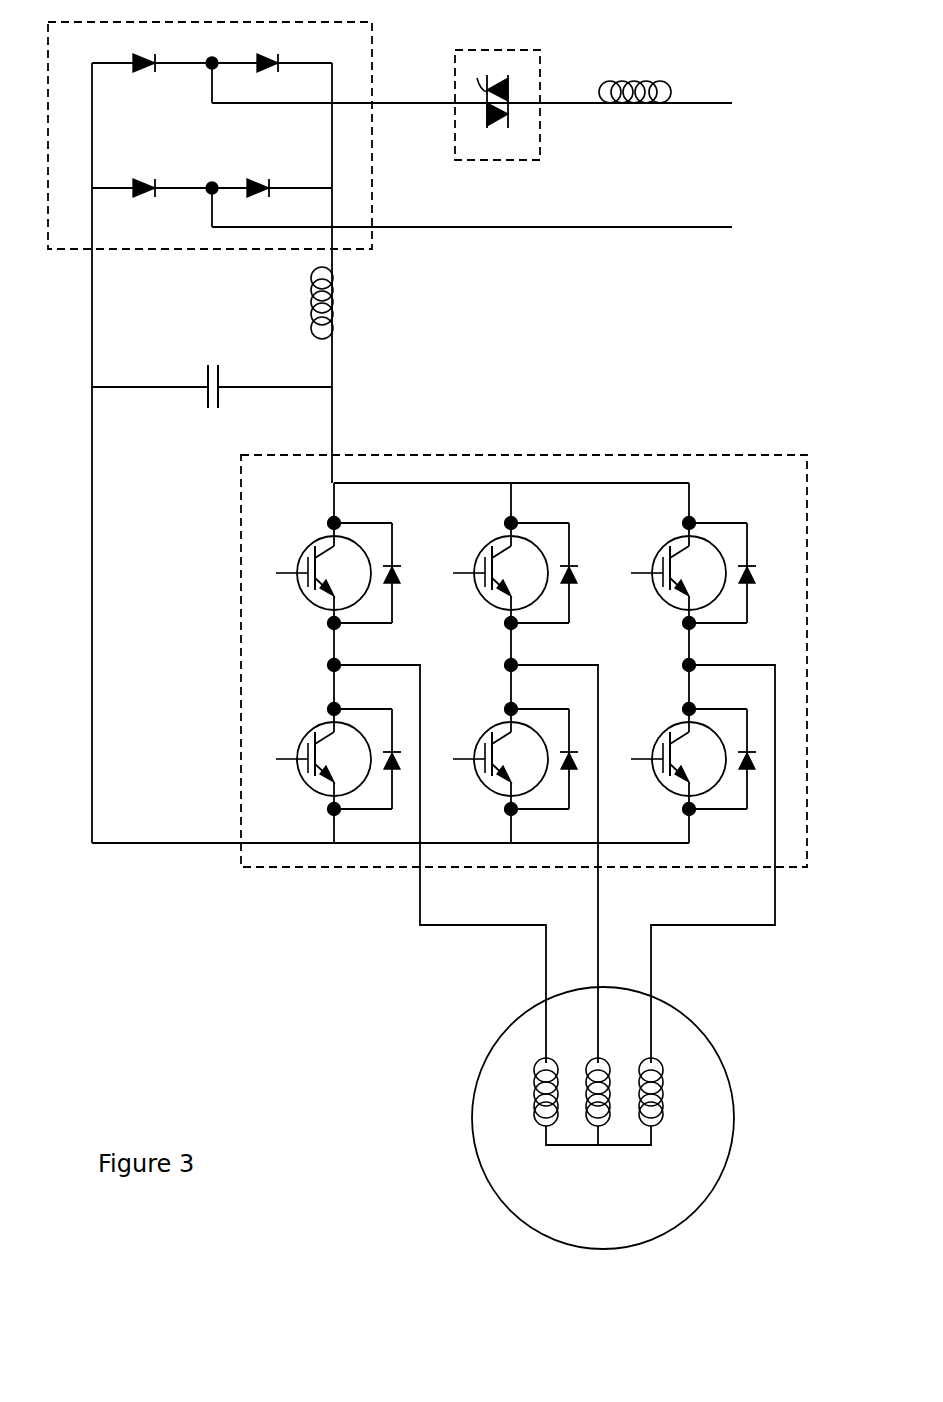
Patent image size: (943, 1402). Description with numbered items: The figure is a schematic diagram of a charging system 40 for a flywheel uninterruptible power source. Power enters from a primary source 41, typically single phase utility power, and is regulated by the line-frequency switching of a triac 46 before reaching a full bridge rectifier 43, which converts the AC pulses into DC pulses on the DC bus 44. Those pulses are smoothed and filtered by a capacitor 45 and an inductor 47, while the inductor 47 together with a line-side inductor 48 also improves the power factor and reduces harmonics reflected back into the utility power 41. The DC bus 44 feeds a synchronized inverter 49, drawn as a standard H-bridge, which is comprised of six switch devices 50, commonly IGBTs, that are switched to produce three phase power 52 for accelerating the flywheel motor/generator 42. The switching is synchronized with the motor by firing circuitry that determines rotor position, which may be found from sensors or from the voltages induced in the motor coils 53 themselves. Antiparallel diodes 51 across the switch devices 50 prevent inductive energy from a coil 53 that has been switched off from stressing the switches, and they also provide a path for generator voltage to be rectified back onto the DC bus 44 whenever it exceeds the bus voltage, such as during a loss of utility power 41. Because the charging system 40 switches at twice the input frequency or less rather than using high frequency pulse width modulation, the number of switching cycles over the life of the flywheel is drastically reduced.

The charging system 40 is at (120, 982).
The primary source 41 is at (804, 175).
The flywheel motor/generator 42 is at (735, 1086).
The full bridge rectifier 43 is at (372, 240).
The DC bus 44 is at (210, 325).
The capacitor 45 is at (208, 400).
The triac 46 is at (540, 58).
The inductor 47 is at (333, 310).
The inductor 48 is at (632, 104).
The inverter 49 is at (474, 625).
The switch devices 50 is at (656, 540).
The antiparallel diodes 51 is at (744, 545).
The three phase power 52 is at (626, 943).
The motor coils 53 is at (531, 1083).